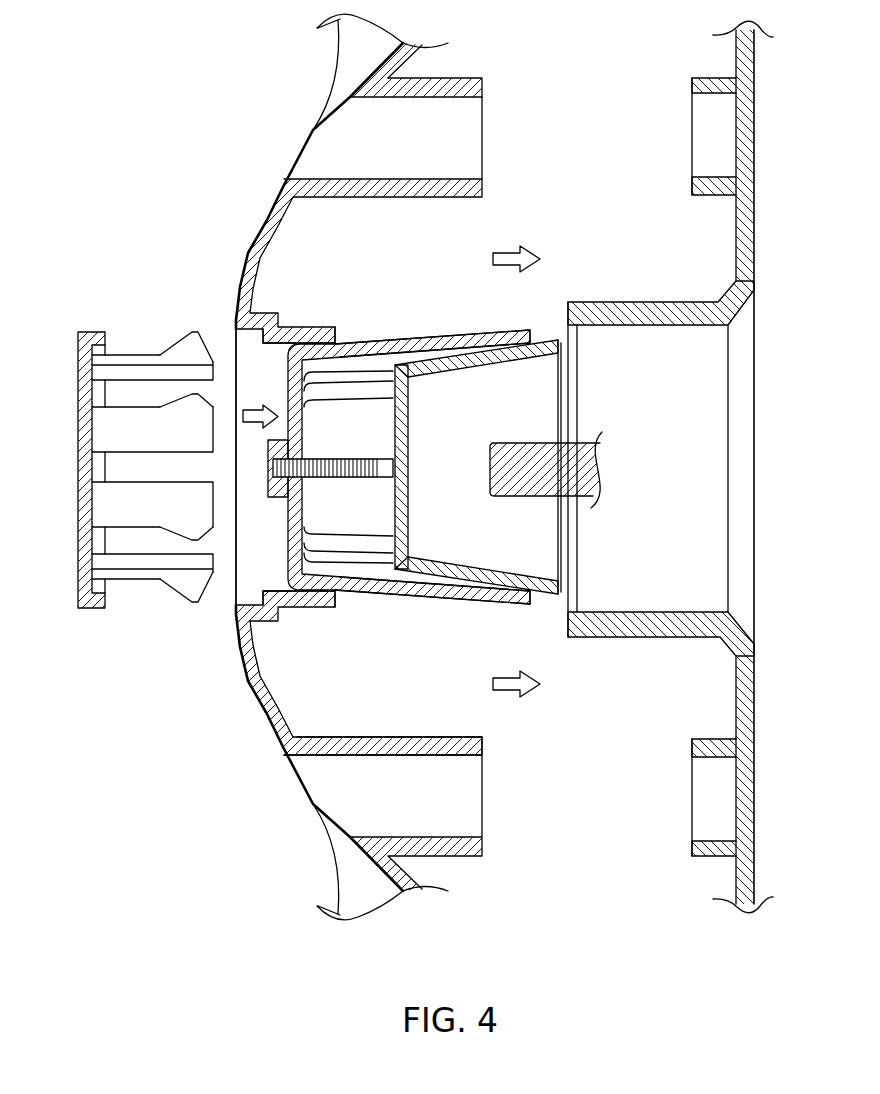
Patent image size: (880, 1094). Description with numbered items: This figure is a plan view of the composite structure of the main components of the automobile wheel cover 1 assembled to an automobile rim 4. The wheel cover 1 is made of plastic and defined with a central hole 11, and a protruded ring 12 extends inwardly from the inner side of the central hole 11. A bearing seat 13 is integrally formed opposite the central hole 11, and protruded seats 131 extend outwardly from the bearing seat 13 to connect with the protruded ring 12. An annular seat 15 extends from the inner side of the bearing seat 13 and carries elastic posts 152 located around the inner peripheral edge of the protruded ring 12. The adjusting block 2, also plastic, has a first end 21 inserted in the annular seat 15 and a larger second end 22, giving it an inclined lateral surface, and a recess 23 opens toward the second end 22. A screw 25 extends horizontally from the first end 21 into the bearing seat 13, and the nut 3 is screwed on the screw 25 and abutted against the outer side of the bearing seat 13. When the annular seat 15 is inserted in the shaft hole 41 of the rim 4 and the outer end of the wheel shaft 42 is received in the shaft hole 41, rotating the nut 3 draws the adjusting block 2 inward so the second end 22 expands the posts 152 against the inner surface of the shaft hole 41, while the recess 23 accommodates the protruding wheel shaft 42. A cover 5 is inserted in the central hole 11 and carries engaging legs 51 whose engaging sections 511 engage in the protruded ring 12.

The automobile wheel cover 1 is at (251, 234).
The central hole 11 is at (247, 562).
The protruded ring 12 is at (262, 690).
The bearing seat 13 is at (248, 669).
The protruded seats 131 is at (299, 357).
The annular seat 15 is at (391, 341).
The elastic post 152 is at (467, 336).
The adjusting block 2 is at (472, 416).
The first end 21 is at (393, 514).
The second end 22 is at (561, 367).
The recess 23 is at (492, 405).
The screw 25 is at (334, 456).
The nut 3 is at (264, 455).
The automobile rim 4 is at (642, 295).
The shaft hole 41 is at (648, 580).
The wheel shaft 42 is at (548, 497).
The cover 5 is at (77, 578).
The engaging legs 51 is at (122, 358).
The engaging section 511 is at (192, 338).